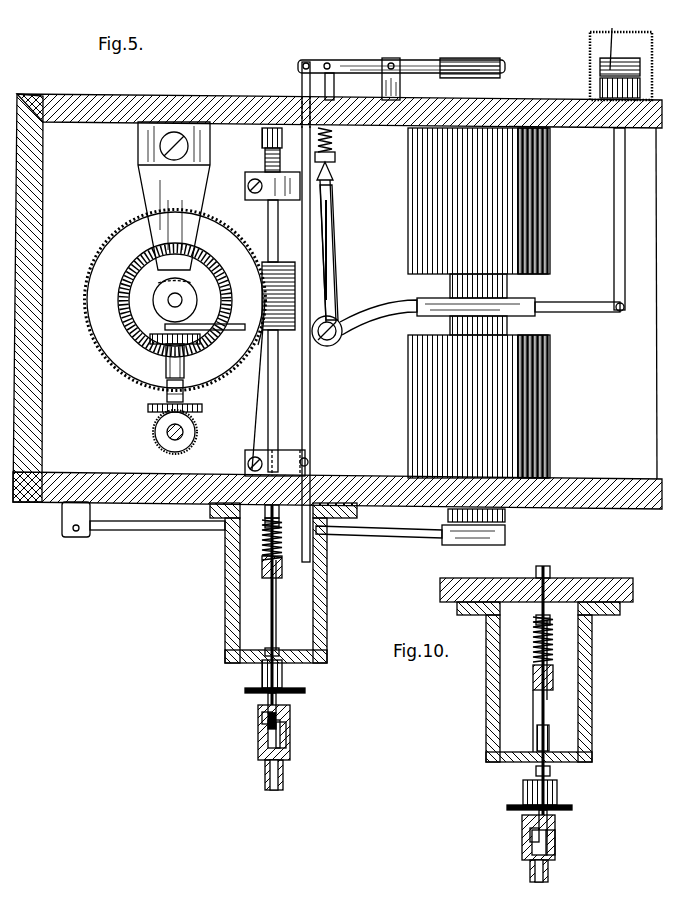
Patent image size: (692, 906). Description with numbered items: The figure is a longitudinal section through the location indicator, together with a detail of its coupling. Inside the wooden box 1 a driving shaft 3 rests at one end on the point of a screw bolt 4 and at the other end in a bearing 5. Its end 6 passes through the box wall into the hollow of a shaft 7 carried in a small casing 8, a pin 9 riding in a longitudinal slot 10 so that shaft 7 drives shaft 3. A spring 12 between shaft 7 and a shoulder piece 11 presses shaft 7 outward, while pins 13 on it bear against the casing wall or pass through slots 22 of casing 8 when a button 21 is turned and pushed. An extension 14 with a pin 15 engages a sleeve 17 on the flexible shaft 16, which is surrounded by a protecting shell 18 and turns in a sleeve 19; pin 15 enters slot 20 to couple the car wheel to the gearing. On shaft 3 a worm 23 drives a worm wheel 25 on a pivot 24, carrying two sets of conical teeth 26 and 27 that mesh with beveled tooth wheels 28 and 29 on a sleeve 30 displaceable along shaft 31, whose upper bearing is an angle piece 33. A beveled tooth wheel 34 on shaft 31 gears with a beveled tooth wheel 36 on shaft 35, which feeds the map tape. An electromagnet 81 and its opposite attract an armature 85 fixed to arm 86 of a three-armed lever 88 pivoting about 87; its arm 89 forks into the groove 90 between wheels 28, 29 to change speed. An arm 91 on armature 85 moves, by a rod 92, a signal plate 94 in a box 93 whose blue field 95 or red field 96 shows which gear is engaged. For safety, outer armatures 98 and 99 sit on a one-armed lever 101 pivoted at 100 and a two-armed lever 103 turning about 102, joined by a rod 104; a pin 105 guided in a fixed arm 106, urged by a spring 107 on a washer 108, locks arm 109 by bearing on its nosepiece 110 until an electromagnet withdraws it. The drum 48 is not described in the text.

In FIG. 5, the wooden box 1 is at (40, 172).
In FIG. 5, the driving shaft 3 is at (270, 402).
In FIG. 5, the screw bolt 4 is at (266, 210).
In FIG. 5, the bearing 5 is at (310, 462).
In FIG. 5, the shaft extension 6 is at (265, 512).
In FIG. 10, the shaft extension 6 is at (550, 572).
In FIG. 5, the shaft 7 is at (268, 610).
In FIG. 10, the shaft 7 is at (548, 706).
In FIG. 5, the casing 8 is at (322, 612).
In FIG. 10, the casing 8 is at (585, 696).
In FIG. 5, the pin 9 is at (280, 572).
In FIG. 10, the pin 9 is at (548, 664).
In FIG. 5, the longitudinal slot 10 is at (266, 562).
In FIG. 10, the longitudinal slot 10 is at (536, 684).
In FIG. 5, the shoulder piece 11 is at (266, 530).
In FIG. 10, the shoulder piece 11 is at (534, 618).
In FIG. 5, the spring 12 is at (283, 540).
In FIG. 10, the spring 12 is at (554, 640).
In FIG. 5, the pins 13 is at (282, 650).
In FIG. 10, the pins 13 is at (551, 772).
In FIG. 5, the extension 14 is at (278, 708).
In FIG. 10, the extension 14 is at (538, 826).
In FIG. 5, the pin 15 is at (262, 722).
In FIG. 10, the pin 15 is at (530, 838).
In FIG. 5, the flexible shaft 16 is at (266, 774).
In FIG. 10, the flexible shaft 16 is at (530, 870).
In FIG. 5, the sleeve 17 is at (290, 736).
In FIG. 10, the sleeve 17 is at (555, 836).
In FIG. 5, the protecting shell 18 is at (284, 776).
In FIG. 10, the protecting shell 18 is at (548, 870).
In FIG. 5, the sleeve 19 is at (258, 752).
In FIG. 10, the sleeve 19 is at (556, 854).
In FIG. 5, the slot 20 is at (268, 736).
In FIG. 5, the button 21 is at (296, 690).
In FIG. 10, the button 21 is at (518, 808).
In FIG. 5, the slots 22 is at (262, 676).
In FIG. 10, the slots 22 is at (554, 740).
In FIG. 5, the worm 23 is at (262, 300).
In FIG. 5, the pivot 24 is at (150, 285).
In FIG. 5, the worm wheel 25 is at (112, 248).
In FIG. 5, the set of conical teeth 26 is at (198, 292).
In FIG. 5, the set of conical teeth 27 is at (130, 312).
In FIG. 5, the beveled tooth wheel 28 is at (196, 306).
In FIG. 5, the beveled tooth wheel 29 is at (168, 348).
In FIG. 5, the sleeve 30 is at (184, 362).
In FIG. 5, the shaft 31 is at (183, 405).
In FIG. 5, the angle piece 33 is at (174, 196).
In FIG. 5, the beveled tooth wheel 34 is at (200, 420).
In FIG. 5, the shaft 35 is at (184, 438).
In FIG. 5, the beveled tooth wheel 36 is at (152, 442).
In FIG. 5, the lower drum 48 is at (546, 418).
In FIG. 5, the electromagnet 81 is at (548, 196).
In FIG. 5, the armature 85 is at (540, 304).
In FIG. 5, the arm 86 is at (382, 318).
In FIG. 5, the pivot 87 is at (340, 342).
In FIG. 5, the three-armed lever 88 is at (318, 345).
In FIG. 5, the arm 89 is at (266, 340).
In FIG. 5, the groove 90 is at (165, 327).
In FIG. 5, the arm 91 is at (596, 300).
In FIG. 5, the rod 92 is at (614, 250).
In FIG. 5, the box 93 is at (598, 48).
In FIG. 5, the signal plate 94 is at (600, 64).
In FIG. 5, the blue field 95 is at (611, 38).
In FIG. 5, the red field 96 is at (600, 88).
In FIG. 5, the armature 98 is at (506, 536).
In FIG. 5, the armature 99 is at (470, 62).
In FIG. 5, the pivot 100 is at (78, 532).
In FIG. 5, the one-armed lever 101 is at (370, 540).
In FIG. 5, the pivot 102 is at (393, 60).
In FIG. 5, the two-armed lever 103 is at (348, 62).
In FIG. 5, the rod 104 is at (302, 80).
In FIG. 5, the pin 105 is at (334, 84).
In FIG. 5, the fixed arm 106 is at (333, 170).
In FIG. 5, the spring 107 is at (334, 136).
In FIG. 5, the washer 108 is at (335, 154).
In FIG. 5, the arm 109 is at (333, 246).
In FIG. 5, the nosepiece 110 is at (340, 188).